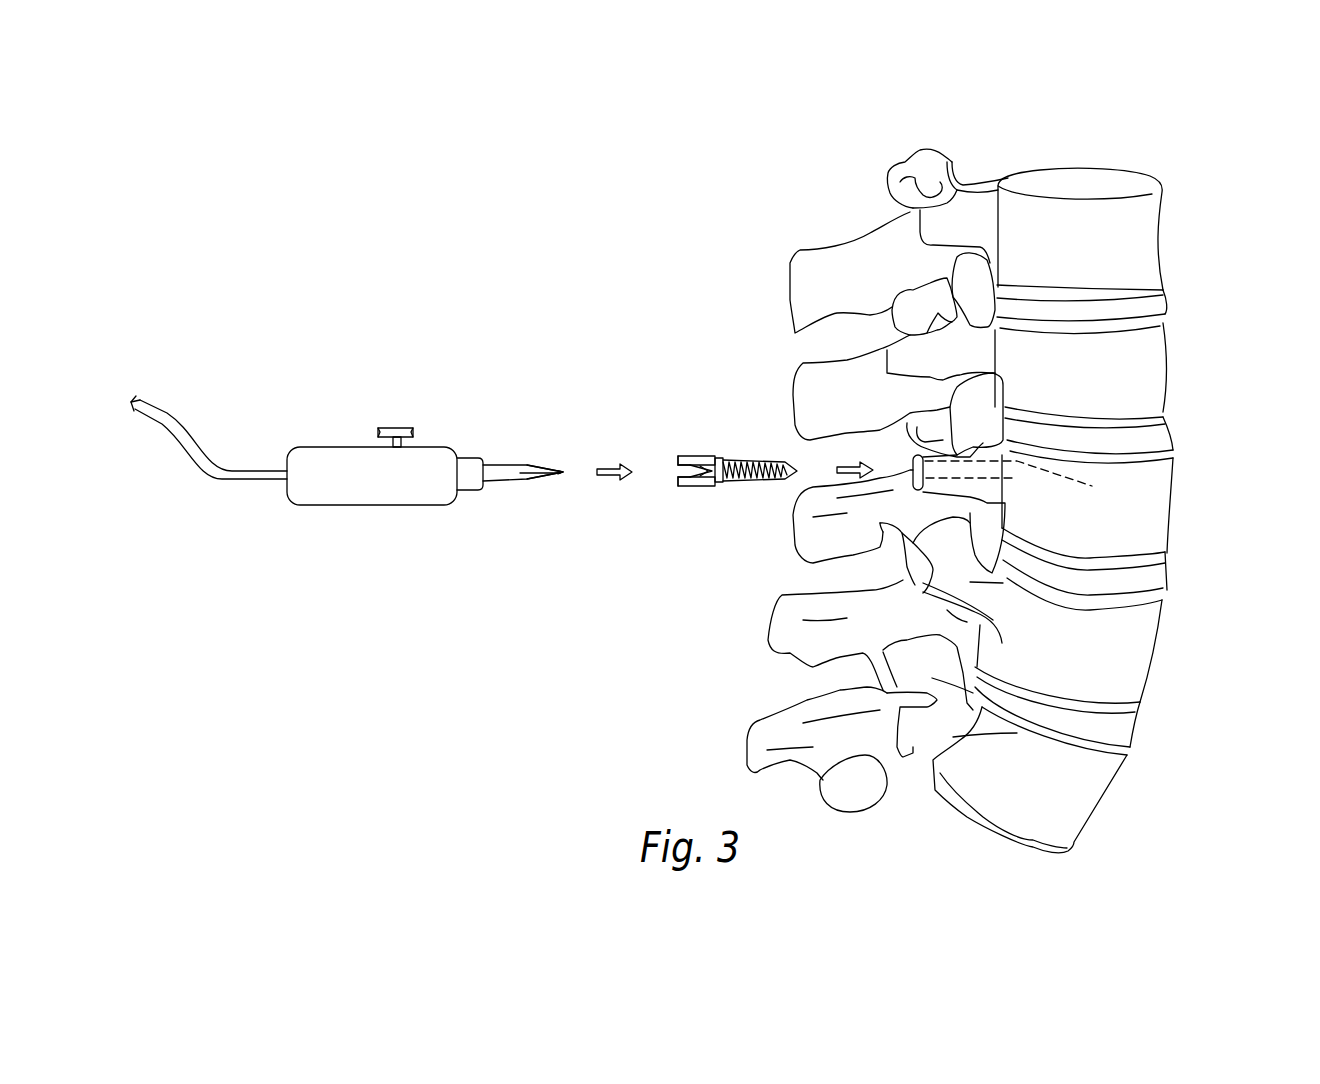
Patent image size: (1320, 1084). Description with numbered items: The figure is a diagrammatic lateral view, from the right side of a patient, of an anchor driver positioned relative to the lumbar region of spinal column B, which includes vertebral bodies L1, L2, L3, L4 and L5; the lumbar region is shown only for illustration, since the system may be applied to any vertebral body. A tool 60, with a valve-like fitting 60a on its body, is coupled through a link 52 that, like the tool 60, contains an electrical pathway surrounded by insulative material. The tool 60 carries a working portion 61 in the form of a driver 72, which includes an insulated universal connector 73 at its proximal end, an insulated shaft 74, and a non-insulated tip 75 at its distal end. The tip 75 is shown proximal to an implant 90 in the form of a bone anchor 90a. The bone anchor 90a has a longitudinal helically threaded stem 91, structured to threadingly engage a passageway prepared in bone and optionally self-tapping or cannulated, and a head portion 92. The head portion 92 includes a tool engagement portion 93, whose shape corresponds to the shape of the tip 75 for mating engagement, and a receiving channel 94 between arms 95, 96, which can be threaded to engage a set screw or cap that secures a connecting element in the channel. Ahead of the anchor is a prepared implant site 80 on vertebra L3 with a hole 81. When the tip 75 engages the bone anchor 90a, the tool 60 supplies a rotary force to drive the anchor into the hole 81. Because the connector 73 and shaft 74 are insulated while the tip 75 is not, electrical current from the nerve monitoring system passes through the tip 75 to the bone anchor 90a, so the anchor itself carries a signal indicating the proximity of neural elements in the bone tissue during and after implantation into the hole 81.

The link 52 is at (150, 412).
The tool 60 is at (347, 416).
The valve 60a is at (398, 427).
The working portion 61 is at (505, 462).
The driver 72 is at (520, 483).
The universal connector 73 is at (468, 498).
The shaft 74 is at (507, 481).
The non-insulated tip 75 is at (570, 442).
The implant site 80 is at (1003, 495).
The hole 81 is at (1015, 476).
The implant 90 is at (712, 498).
The bone anchor 90a is at (741, 480).
The helically threaded stem 91 is at (731, 494).
The head portion 92 is at (710, 455).
The tool engagement portion 93 is at (697, 487).
The receiving channel 94 is at (680, 474).
The arm 95 is at (677, 458).
The arm 96 is at (678, 487).
The spinal column B is at (1011, 482).
The vertebral body L1 is at (1133, 243).
The vertebral body L2 is at (1142, 372).
The vertebra L3 is at (1002, 491).
The vertebral body L4 is at (1130, 655).
The vertebral body L5 is at (1065, 803).